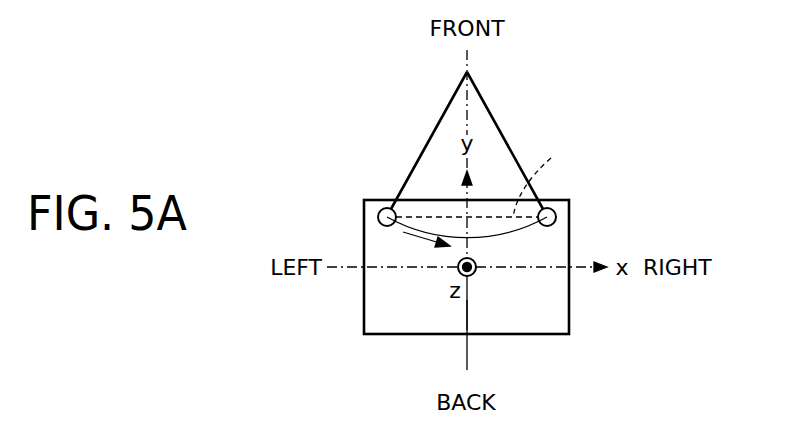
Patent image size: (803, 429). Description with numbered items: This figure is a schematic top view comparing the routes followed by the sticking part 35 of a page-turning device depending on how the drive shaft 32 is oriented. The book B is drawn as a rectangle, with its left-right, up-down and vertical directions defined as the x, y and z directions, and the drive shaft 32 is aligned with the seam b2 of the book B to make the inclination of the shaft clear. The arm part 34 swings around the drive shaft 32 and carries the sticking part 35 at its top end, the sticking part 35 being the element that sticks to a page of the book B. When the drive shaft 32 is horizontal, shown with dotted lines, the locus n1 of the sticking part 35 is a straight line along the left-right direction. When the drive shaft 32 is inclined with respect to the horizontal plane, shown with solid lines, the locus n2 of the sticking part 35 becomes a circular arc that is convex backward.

The drive shaft 32 is at (468, 55).
The arm part 34 is at (436, 128).
The sticking part 35 is at (378, 213).
The locus n1 is at (542, 175).
The locus n2 is at (515, 237).
The seam b2 is at (467, 317).
The book B is at (535, 320).